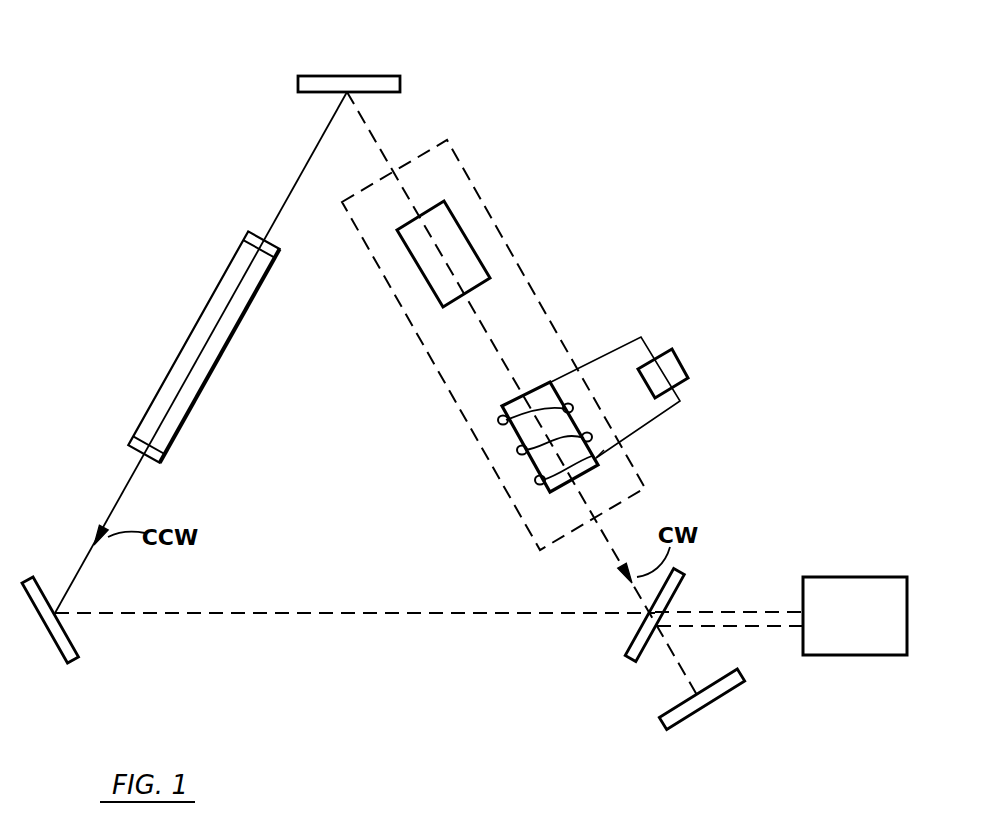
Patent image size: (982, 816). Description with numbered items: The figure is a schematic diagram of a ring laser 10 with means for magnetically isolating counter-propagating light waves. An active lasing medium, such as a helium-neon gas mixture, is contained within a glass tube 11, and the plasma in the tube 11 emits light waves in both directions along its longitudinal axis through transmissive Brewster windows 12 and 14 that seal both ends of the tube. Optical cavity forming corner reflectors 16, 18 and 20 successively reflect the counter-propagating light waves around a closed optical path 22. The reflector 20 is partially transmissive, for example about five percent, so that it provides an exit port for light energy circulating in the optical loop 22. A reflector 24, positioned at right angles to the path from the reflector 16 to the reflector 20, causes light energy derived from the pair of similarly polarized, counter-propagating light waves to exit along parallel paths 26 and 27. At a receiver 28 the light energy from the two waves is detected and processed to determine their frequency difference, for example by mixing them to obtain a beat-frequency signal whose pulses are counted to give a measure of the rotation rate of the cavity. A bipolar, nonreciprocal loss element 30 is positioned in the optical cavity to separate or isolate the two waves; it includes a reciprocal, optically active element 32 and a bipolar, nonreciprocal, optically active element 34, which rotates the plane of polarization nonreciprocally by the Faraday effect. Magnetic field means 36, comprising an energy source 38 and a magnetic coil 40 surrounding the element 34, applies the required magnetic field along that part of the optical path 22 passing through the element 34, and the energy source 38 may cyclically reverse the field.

The ring laser 10 is at (250, 83).
The glass tube 11 is at (230, 302).
The Brewster window 12 is at (130, 442).
The Brewster window 14 is at (250, 238).
The corner reflector 16 is at (367, 82).
The corner reflector 18 is at (70, 645).
The corner reflector 20 is at (648, 633).
The closed optical path 22 is at (318, 612).
The reflector 24 is at (662, 718).
The parallel path 26 is at (722, 612).
The parallel path 27 is at (753, 626).
The receiver 28 is at (872, 627).
The bipolar, nonreciprocal loss element 30 is at (415, 330).
The reciprocal, optically active element 32 is at (458, 240).
The bipolar, nonreciprocal, optically active element 34 is at (537, 392).
The magnetic field means 36 is at (697, 350).
The energy source 38 is at (667, 372).
The magnetic coil 40 is at (603, 447).